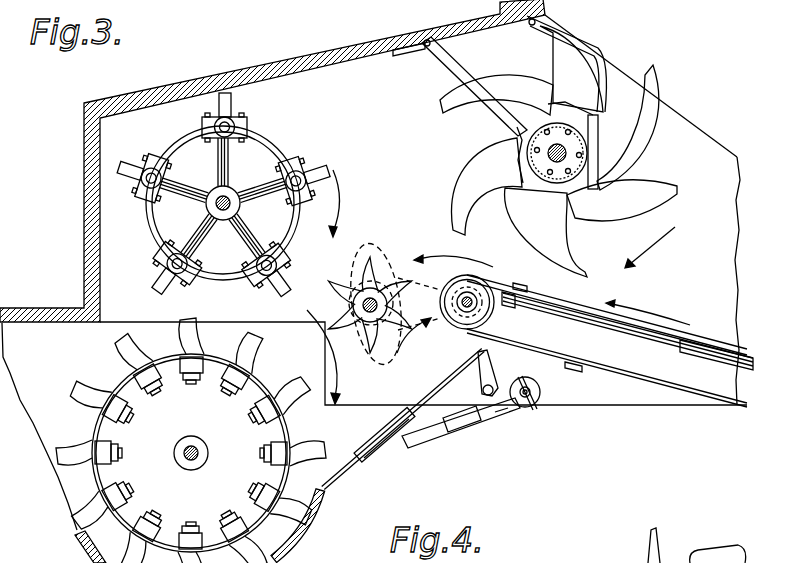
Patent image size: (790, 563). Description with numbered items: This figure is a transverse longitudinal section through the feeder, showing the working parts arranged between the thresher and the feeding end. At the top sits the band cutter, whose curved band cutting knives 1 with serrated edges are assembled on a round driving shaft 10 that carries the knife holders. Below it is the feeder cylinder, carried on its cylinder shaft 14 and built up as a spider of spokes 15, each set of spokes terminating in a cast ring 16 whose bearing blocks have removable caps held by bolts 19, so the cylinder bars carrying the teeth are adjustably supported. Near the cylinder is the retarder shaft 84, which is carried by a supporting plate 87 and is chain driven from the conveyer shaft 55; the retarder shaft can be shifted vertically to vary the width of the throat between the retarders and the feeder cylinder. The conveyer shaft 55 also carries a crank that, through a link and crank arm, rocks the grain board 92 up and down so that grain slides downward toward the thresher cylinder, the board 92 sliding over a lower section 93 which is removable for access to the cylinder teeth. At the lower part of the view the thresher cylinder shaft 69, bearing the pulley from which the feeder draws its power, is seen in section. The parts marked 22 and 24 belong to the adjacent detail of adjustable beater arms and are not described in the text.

In FIG. 3, the band cutting knives 1 is at (535, 146).
In FIG. 3, the driving shaft 10 is at (570, 147).
In FIG. 3, the cylinder shaft 14 is at (223, 199).
In FIG. 3, the spokes 15 is at (247, 233).
In FIG. 3, the cast ring 16 is at (297, 230).
In FIG. 3, the bolts 19 is at (287, 263).
In FIG. 3, the conveyer shaft 55 is at (476, 306).
In FIG. 3, the thresher cylinder shaft 69 is at (197, 448).
In FIG. 3, the retarder shaft 84 is at (382, 299).
In FIG. 3, the supporting plate 87 is at (383, 249).
In FIG. 3, the grain board 92 is at (428, 394).
In FIG. 3, the lower section 93 is at (347, 462).
In FIG. 4, the cylinder 22 is at (710, 550).
In FIG. 4, the pin 24 is at (620, 545).